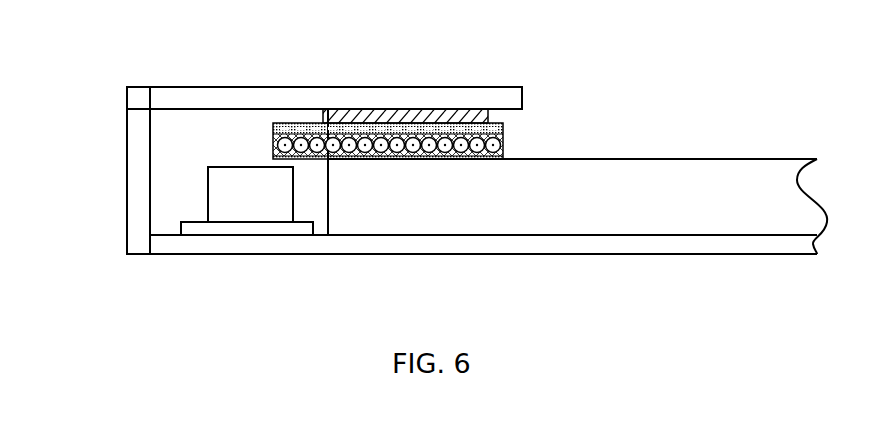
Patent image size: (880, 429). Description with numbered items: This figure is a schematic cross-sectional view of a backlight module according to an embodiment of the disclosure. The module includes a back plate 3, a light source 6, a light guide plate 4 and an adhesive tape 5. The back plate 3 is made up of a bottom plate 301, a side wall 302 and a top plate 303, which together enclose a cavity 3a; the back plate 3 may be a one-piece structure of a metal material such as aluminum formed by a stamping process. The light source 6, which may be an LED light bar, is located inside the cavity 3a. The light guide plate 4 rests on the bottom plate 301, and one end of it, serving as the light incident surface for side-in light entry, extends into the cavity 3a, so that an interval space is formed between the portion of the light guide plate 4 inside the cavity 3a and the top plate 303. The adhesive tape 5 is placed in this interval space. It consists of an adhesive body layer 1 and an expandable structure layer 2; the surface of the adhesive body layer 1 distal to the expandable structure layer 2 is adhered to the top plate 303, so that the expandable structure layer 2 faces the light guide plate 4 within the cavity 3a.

The adhesive body layer 1 is at (490, 114).
The expandable structure layer 2 is at (503, 144).
The back plate 3 is at (434, 168).
The cavity 3a is at (253, 145).
The bottom plate 301 is at (244, 244).
The side wall 302 is at (137, 158).
The top plate 303 is at (275, 92).
The light guide plate 4 is at (548, 200).
The adhesive tape 5 is at (365, 110).
The light source 6 is at (232, 202).